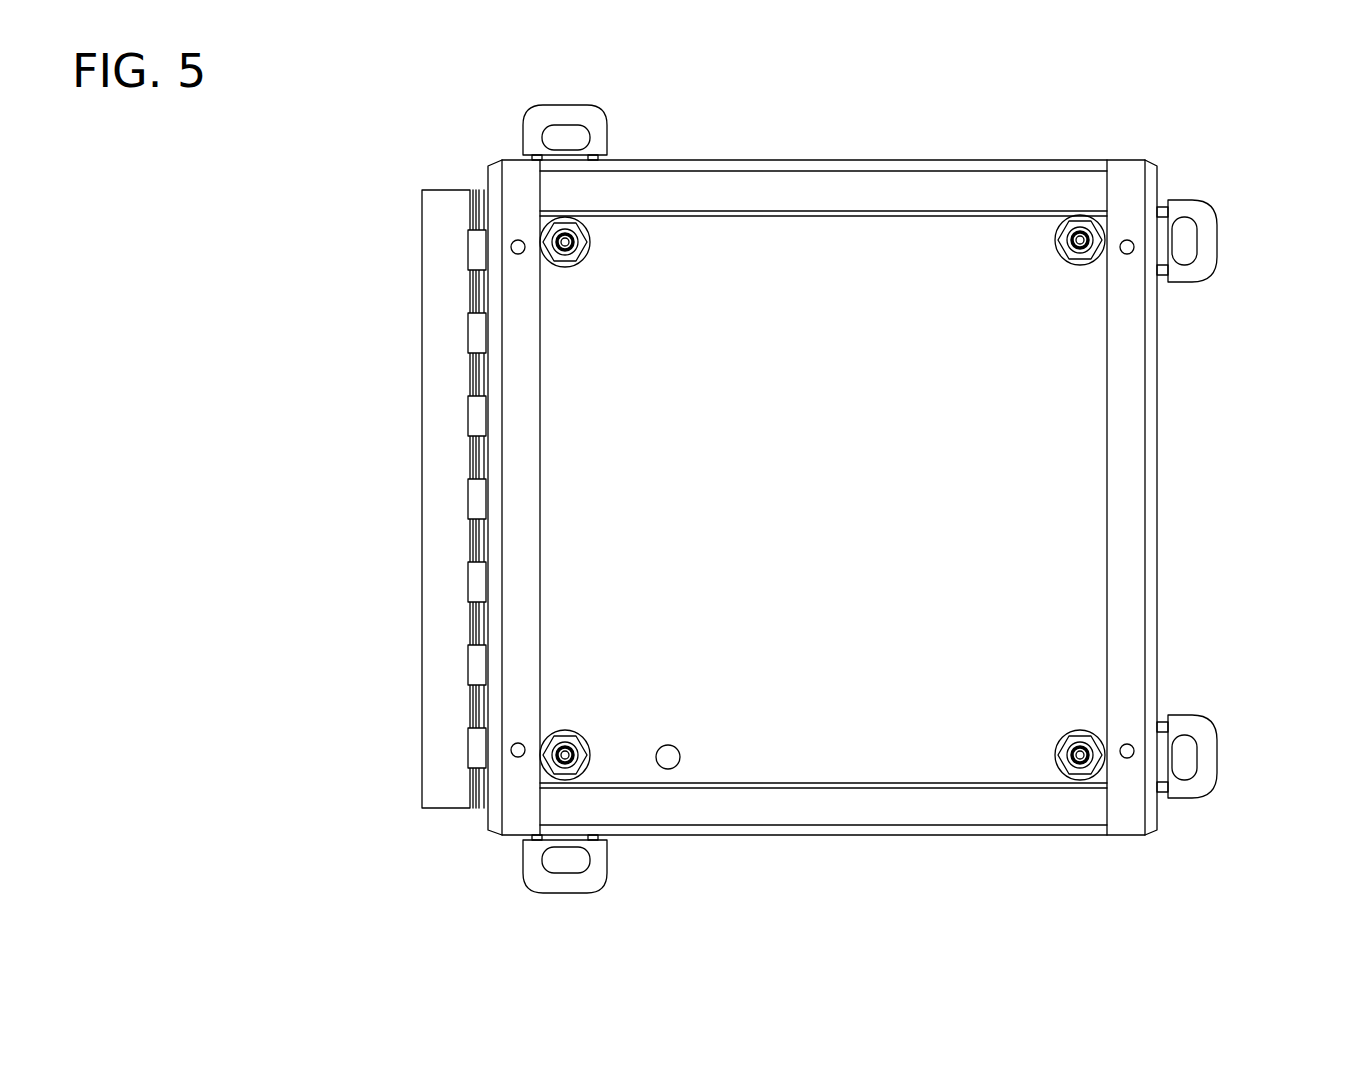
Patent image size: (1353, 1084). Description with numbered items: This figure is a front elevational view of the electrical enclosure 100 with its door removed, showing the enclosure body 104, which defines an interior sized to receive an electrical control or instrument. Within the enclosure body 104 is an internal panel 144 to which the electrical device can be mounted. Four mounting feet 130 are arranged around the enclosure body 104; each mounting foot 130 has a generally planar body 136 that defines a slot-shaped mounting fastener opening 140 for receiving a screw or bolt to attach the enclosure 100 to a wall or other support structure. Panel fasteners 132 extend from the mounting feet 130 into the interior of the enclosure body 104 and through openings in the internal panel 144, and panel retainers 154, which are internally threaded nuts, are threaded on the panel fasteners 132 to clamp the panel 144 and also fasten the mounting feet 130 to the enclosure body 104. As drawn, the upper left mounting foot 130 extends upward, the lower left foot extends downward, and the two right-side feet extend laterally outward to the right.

The electrical enclosure 100 is at (853, 103).
The enclosure body 104 is at (960, 157).
The mounting foot 130 is at (862, 507).
The panel fastener 132 is at (728, 466).
The planar body 136 is at (600, 112).
The mounting fastener opening 140 is at (913, 507).
The internal panel 144 is at (845, 520).
The panel retainer 154 is at (555, 222).